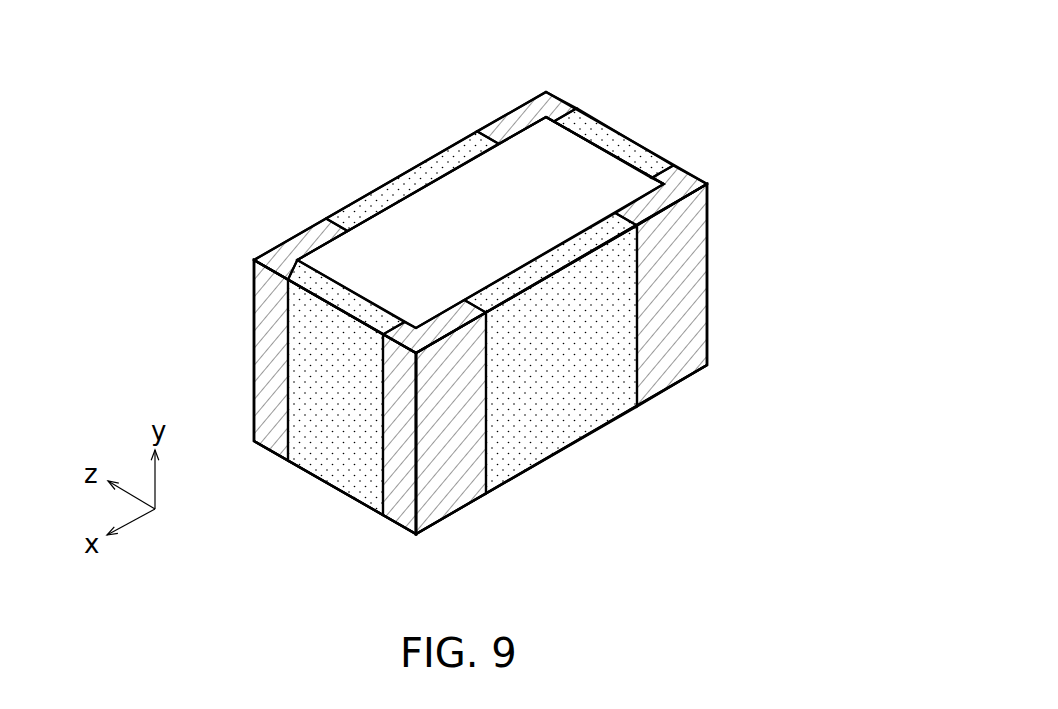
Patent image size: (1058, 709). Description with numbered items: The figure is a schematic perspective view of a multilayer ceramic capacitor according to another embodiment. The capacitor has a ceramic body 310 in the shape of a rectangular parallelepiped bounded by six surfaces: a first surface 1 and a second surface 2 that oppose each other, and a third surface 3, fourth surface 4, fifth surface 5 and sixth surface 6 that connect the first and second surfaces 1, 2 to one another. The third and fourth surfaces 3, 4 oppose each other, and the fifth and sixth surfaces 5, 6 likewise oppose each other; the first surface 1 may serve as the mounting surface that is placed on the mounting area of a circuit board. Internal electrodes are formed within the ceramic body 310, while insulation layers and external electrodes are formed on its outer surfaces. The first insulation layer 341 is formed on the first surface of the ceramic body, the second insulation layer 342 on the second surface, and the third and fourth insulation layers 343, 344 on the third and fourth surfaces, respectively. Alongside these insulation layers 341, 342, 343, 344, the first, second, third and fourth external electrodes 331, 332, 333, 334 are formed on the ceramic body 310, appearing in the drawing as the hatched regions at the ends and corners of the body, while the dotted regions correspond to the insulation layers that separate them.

The first surface 1 is at (705, 413).
The second surface 2 is at (315, 183).
The third surface 3 is at (313, 357).
The fourth surface 4 is at (562, 147).
The fifth surface 5 is at (482, 200).
The sixth surface 6 is at (507, 453).
The ceramic body 310 is at (612, 165).
The first external electrode 331 is at (455, 514).
The second external electrode 332 is at (677, 265).
The third external electrode 333 is at (293, 245).
The fourth external electrode 334 is at (520, 113).
The first insulation layer 341 is at (594, 418).
The second insulation layer 342 is at (405, 180).
The third insulation layer 343 is at (335, 468).
The fourth insulation layer 344 is at (652, 162).